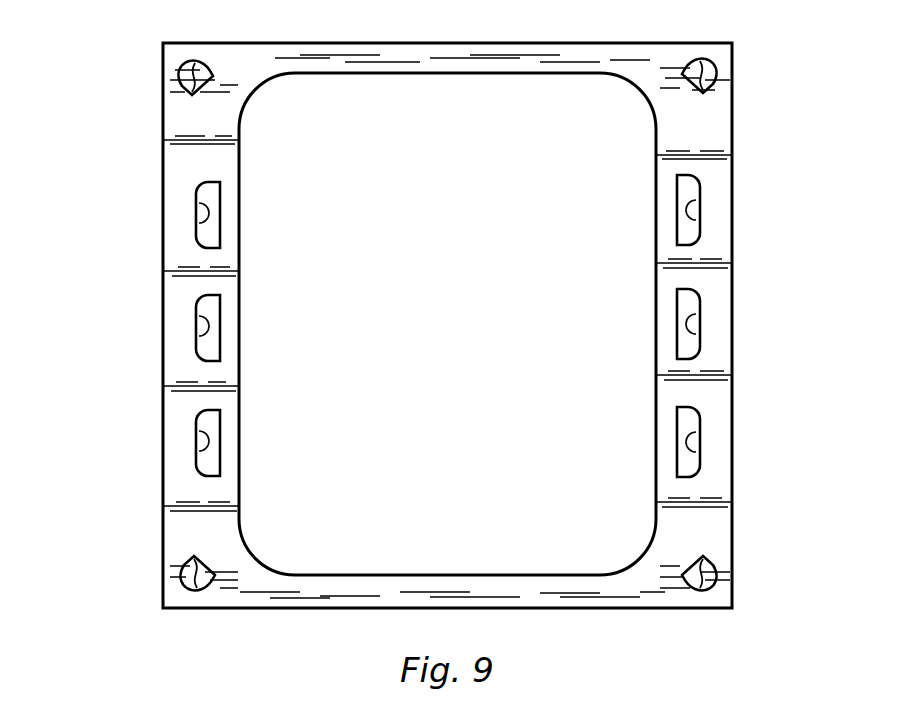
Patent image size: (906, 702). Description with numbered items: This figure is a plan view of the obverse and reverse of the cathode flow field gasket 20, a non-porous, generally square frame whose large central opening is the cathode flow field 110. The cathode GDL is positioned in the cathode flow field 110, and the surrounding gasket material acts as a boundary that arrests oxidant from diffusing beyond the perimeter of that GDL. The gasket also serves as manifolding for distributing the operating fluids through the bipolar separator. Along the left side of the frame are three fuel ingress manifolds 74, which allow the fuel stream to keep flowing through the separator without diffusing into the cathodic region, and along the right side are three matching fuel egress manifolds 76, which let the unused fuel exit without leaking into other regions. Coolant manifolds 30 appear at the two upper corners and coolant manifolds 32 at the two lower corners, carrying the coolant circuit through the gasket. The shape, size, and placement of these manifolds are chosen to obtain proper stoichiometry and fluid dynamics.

The cathode flow field gasket 20 is at (124, 379).
The coolant manifold 30 is at (180, 82).
The coolant manifold 32 is at (185, 572).
The fuel ingress manifold 74 is at (199, 200).
The fuel egress manifold 76 is at (682, 222).
The cathode flow field 110 is at (356, 577).